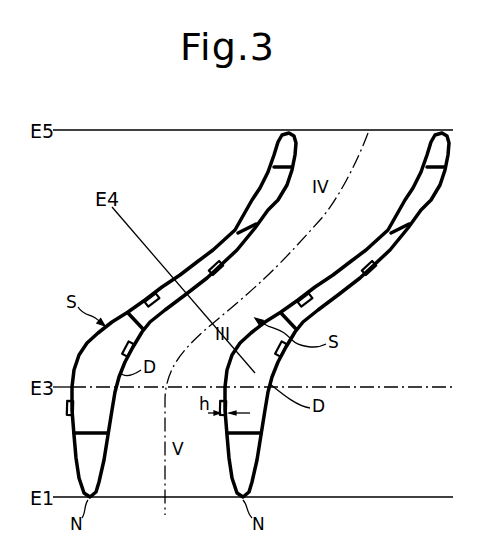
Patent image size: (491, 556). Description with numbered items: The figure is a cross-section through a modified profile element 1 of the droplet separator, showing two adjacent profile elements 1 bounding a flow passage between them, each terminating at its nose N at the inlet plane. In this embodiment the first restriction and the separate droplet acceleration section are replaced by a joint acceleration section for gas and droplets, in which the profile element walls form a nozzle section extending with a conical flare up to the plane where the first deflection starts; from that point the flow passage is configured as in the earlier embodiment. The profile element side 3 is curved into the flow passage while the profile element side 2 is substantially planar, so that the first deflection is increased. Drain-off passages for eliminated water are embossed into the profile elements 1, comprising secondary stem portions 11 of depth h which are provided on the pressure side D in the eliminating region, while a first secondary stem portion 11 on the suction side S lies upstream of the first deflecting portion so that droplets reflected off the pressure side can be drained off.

The profile element 1 is at (260, 333).
The profile element side 2 is at (230, 478).
The profile element side 3 is at (102, 470).
The secondary stem portion 11 is at (148, 296).